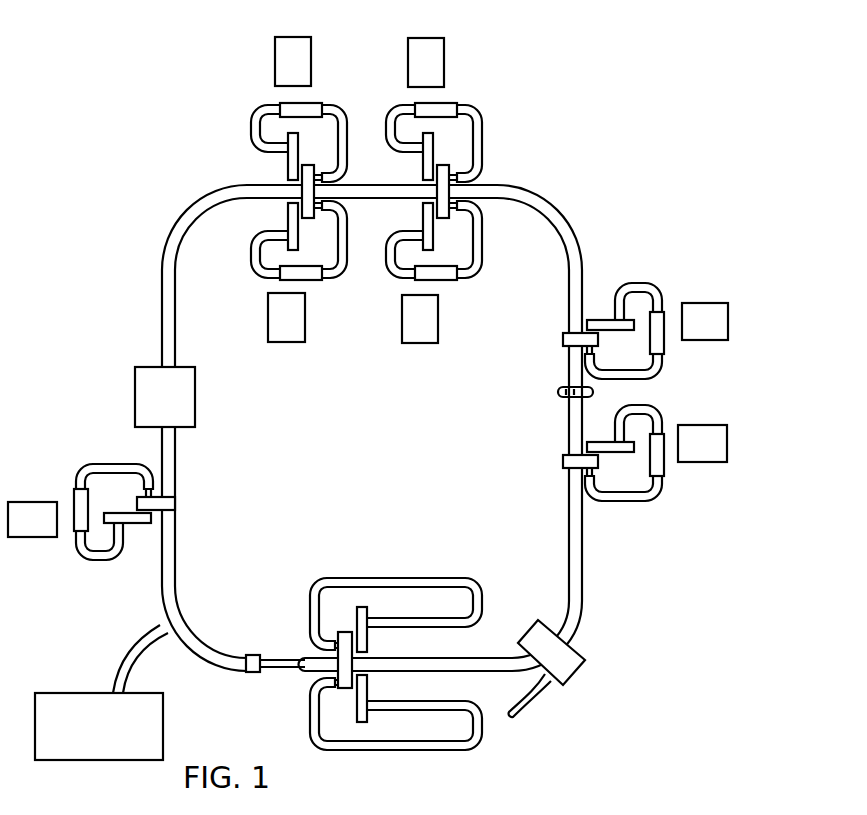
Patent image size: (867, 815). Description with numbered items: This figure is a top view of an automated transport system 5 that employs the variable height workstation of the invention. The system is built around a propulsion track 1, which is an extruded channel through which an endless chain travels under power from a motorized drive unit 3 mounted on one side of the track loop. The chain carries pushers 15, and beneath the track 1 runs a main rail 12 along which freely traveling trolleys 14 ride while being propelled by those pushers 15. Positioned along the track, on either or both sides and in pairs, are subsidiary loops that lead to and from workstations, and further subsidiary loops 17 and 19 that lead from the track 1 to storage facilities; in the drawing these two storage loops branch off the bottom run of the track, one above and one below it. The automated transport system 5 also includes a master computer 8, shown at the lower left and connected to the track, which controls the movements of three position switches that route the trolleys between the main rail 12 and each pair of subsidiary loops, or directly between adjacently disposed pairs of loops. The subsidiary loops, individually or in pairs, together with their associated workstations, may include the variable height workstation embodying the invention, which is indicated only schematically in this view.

The propulsion track 1 is at (162, 302).
The motorized drive unit 3 is at (195, 398).
The automated transport system 5 is at (384, 393).
The master computer 8 is at (85, 693).
The main rail 12 is at (281, 670).
The trolley 14 is at (594, 392).
The pusher 15 is at (560, 394).
The subsidiary loop 17 is at (403, 578).
The subsidiary loop 19 is at (405, 749).